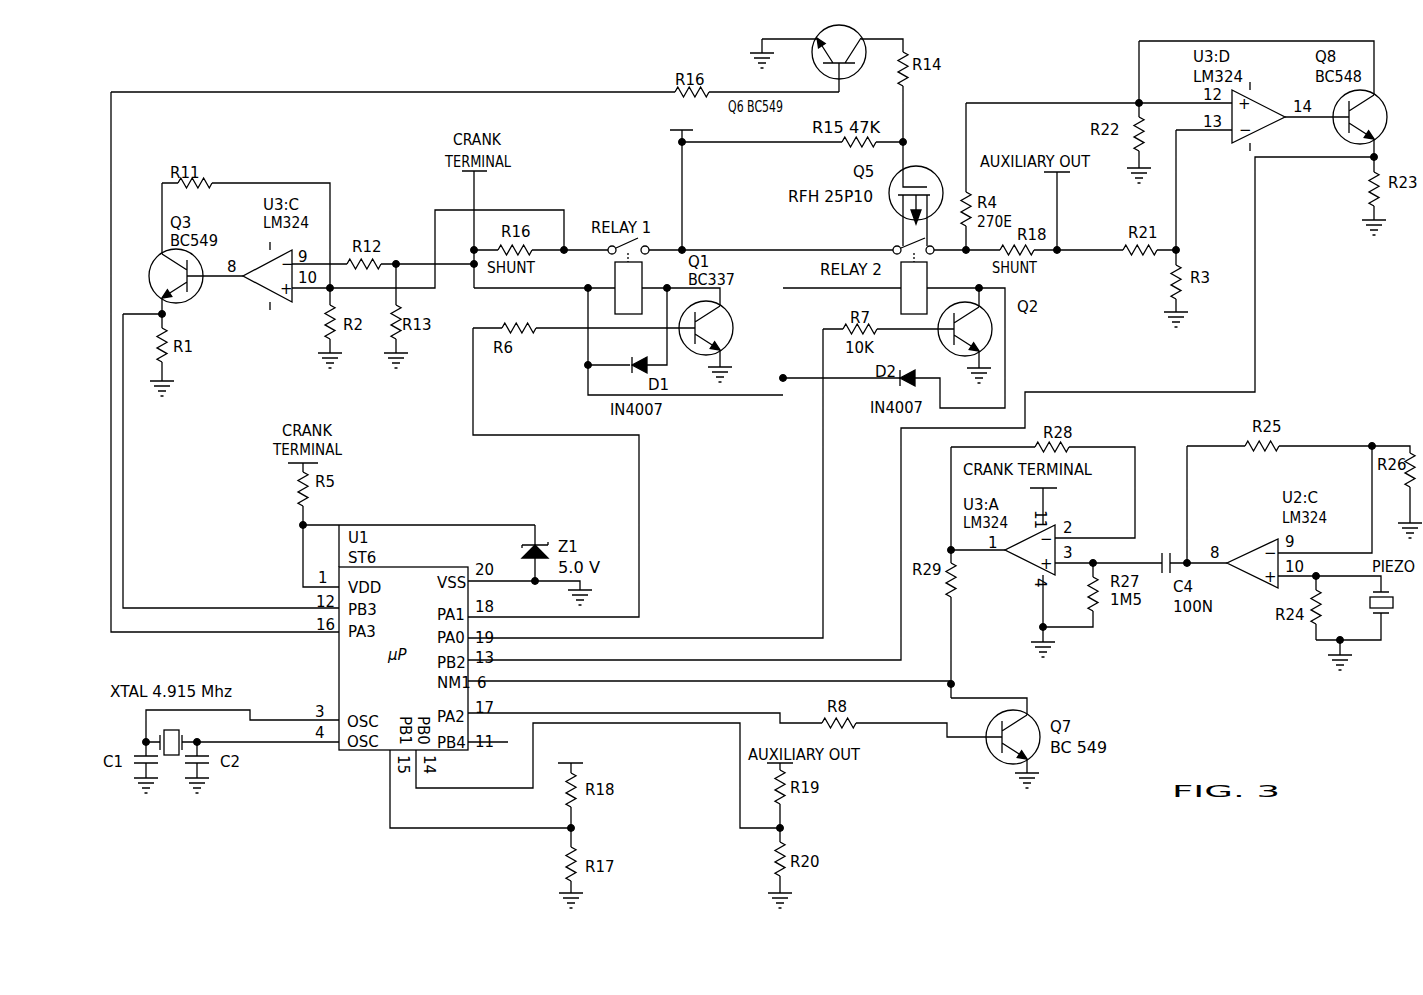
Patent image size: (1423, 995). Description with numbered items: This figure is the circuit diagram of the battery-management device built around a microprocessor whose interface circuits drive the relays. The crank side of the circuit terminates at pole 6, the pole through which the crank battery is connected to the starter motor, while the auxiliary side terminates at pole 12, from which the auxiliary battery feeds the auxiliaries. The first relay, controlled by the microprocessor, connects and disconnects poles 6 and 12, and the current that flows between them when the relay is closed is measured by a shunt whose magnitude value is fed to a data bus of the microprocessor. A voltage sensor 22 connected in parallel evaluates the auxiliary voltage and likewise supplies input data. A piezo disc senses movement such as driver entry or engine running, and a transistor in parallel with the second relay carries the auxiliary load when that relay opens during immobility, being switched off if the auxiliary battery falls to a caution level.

The pole 6 is at (486, 176).
The pole 12 is at (560, 764).
The voltage sensor 22 is at (578, 828).